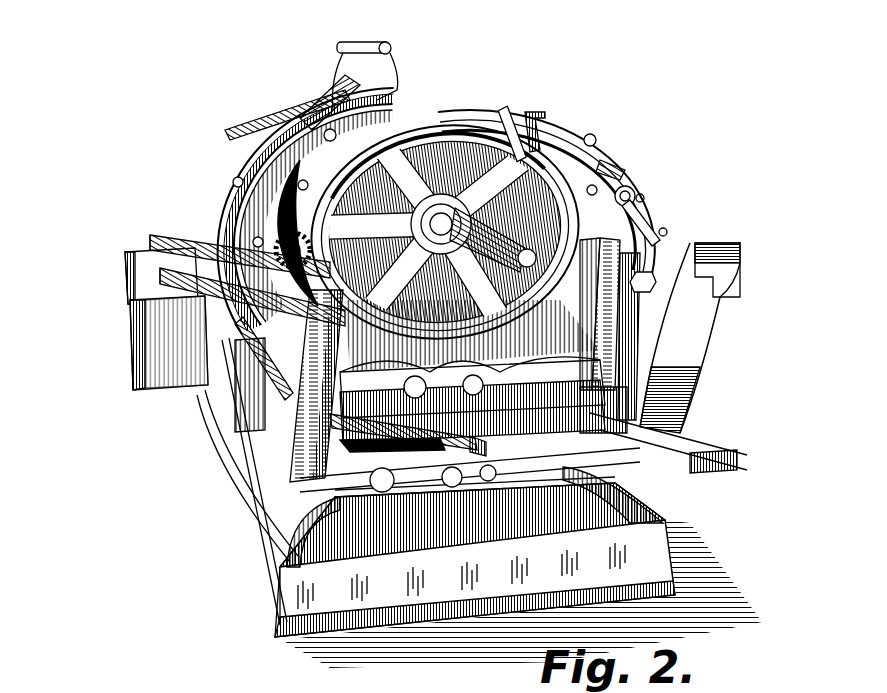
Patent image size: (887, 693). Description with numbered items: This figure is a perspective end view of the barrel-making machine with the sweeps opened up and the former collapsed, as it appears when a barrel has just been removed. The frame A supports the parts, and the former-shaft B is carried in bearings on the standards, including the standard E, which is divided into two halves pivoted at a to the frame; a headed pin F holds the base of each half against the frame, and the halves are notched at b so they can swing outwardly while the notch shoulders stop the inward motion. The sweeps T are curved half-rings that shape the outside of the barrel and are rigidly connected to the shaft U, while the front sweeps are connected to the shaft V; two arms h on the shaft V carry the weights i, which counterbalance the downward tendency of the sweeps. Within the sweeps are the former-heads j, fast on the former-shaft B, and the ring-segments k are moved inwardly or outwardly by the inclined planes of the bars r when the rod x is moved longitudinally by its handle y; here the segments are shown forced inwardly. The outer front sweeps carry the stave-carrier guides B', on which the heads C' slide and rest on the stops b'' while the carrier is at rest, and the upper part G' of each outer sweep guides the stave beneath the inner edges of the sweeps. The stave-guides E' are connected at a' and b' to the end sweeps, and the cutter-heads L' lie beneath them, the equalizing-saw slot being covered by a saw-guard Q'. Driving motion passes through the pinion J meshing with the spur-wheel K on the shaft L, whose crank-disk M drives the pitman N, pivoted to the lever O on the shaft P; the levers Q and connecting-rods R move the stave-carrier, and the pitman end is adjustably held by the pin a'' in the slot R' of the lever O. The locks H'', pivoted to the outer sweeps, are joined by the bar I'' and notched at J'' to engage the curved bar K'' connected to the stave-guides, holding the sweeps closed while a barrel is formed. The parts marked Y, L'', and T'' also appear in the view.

The frame A is at (262, 612).
The headed pin F is at (287, 562).
The pitman N is at (330, 442).
The standard E is at (450, 389).
The notch b is at (489, 494).
The slot R' is at (523, 471).
The arm h is at (160, 270).
The spur-wheel K is at (197, 297).
The weight i is at (127, 323).
The rear sweep T is at (269, 211).
The ring-segment k is at (320, 162).
The pinion J is at (229, 208).
The rod x is at (465, 262).
The wheel Y is at (445, 231).
The ring L'' is at (558, 188).
The pin T'' is at (640, 100).
The connection point b' is at (611, 163).
The stave-guide E' is at (645, 158).
The upper part of outer sweep G' is at (697, 168).
The saw-guard Q' is at (457, 431).
The cutter-head L' is at (697, 206).
The handle y is at (665, 230).
The connection point a' is at (715, 229).
The head C' is at (755, 232).
The stave-carrier guide B' is at (689, 335).
The stop b'' is at (671, 315).
The pivot a is at (662, 336).
The shaft U is at (640, 375).
The lever O is at (650, 395).
The connecting-rod R is at (643, 397).
The lever Q is at (714, 412).
The shaft P is at (693, 433).
The pin a'' is at (680, 476).
The bar I'' is at (364, 55).
The notch J'' is at (301, 97).
The lock H'' is at (437, 54).
The former-head j is at (410, 130).
The bar r is at (397, 133).
The former-shaft B is at (529, 107).
The curved bar K'' is at (566, 120).
The shaft L is at (176, 400).
The crank-disk M is at (300, 405).
The shaft V is at (330, 430).